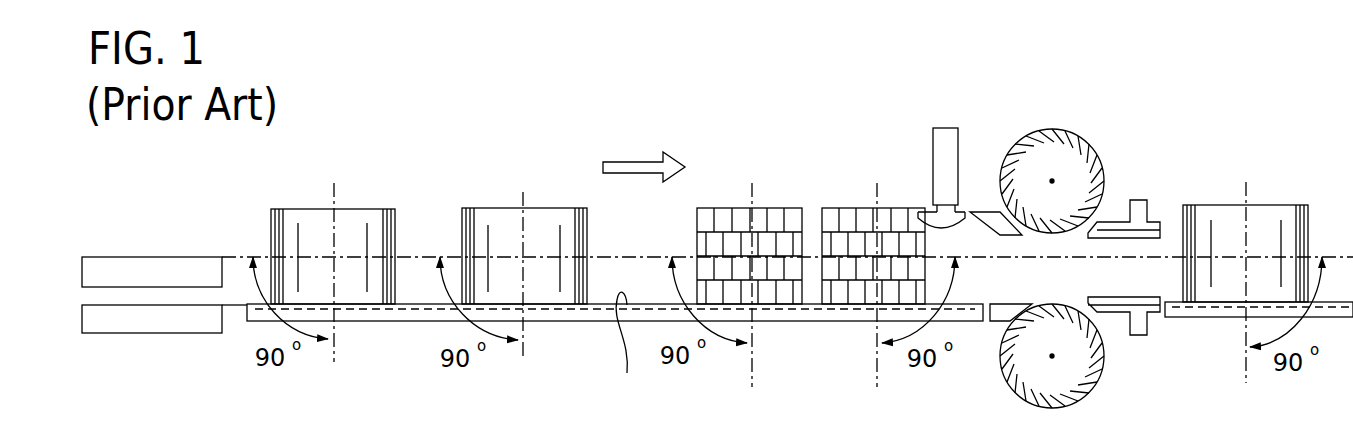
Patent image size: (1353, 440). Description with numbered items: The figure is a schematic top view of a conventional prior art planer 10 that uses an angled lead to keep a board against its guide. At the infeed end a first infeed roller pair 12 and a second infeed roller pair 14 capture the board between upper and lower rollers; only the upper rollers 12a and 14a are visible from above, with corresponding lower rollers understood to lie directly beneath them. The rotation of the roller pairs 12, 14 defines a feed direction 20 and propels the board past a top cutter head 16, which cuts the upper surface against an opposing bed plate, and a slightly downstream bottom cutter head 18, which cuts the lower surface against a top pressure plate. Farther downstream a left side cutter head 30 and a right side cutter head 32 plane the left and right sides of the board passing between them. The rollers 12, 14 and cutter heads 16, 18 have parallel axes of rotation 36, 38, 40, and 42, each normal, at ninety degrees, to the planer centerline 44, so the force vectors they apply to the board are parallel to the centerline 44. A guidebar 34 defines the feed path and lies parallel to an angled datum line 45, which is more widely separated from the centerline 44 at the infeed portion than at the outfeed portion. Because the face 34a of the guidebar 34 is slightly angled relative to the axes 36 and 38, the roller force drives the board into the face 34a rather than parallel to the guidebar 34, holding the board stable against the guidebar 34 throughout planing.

The planer 10 is at (216, 181).
The first infeed roller pair 12 is at (294, 207).
The upper roller 12a is at (365, 223).
The second infeed roller pair 14 is at (496, 206).
The upper roller 14a is at (558, 225).
The top cutter head 16 is at (760, 208).
The bottom cutter head 18 is at (833, 208).
The feed direction 20 is at (628, 160).
The left side cutter head 30 is at (1092, 160).
The right side cutter head 32 is at (1097, 364).
The guidebar 34 is at (428, 320).
The face of guidebar 34a is at (634, 351).
The axis of rotation 36 is at (337, 332).
The axis of rotation 38 is at (526, 328).
The axis of rotation 40 is at (752, 362).
The axis of rotation 42 is at (877, 360).
The centerline 44 is at (235, 256).
The datum line 45 is at (237, 305).